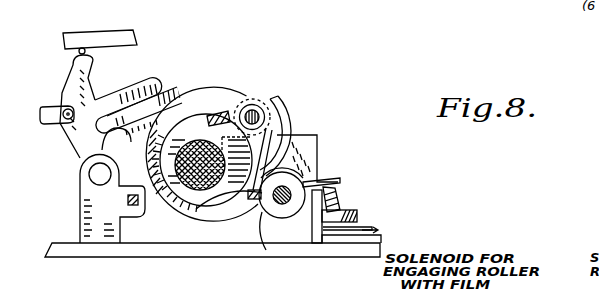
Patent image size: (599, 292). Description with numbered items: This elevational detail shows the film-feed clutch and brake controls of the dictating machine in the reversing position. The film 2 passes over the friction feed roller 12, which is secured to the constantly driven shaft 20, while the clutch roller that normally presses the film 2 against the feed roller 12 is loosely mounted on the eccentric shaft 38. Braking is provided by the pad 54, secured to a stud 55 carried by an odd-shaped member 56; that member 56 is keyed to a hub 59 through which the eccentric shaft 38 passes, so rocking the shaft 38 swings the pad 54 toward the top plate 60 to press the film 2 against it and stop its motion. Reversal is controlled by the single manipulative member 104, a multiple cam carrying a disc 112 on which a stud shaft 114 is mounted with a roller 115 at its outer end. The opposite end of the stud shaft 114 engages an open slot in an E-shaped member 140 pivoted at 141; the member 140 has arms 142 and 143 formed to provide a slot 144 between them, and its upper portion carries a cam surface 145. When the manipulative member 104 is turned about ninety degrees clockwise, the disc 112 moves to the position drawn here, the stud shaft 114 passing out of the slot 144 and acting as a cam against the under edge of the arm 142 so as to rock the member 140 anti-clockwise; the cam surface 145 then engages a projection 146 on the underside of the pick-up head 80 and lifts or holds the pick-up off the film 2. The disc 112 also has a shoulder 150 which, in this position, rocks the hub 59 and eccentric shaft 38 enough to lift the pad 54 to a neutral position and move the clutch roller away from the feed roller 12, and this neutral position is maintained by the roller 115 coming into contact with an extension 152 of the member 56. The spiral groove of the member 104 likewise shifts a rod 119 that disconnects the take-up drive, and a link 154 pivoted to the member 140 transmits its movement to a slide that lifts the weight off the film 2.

The film 2 is at (392, 227).
The friction feed roller 12 is at (224, 112).
The shaft 20 is at (187, 189).
The eccentric shaft 38 is at (288, 214).
The brake pad 54 is at (357, 216).
The stud 55 is at (338, 200).
The odd shaped member 56 is at (318, 158).
The hub 59 is at (287, 205).
The top plate 60 is at (109, 251).
The pick-up head 80 is at (135, 37).
The manipulative member 104 is at (193, 207).
The disc 112 is at (204, 199).
The stud shaft 114 is at (257, 106).
The roller 115 is at (279, 99).
The rod 119 is at (127, 205).
The member 140 is at (68, 136).
The pivot 141 is at (96, 175).
The arm 142 is at (157, 72).
The arm 143 is at (128, 146).
The slot 144 is at (106, 127).
The cam surface 145 is at (80, 60).
The projection 146 is at (84, 49).
The shoulder 150 is at (248, 190).
The extension 152 is at (251, 200).
The link 154 is at (50, 108).